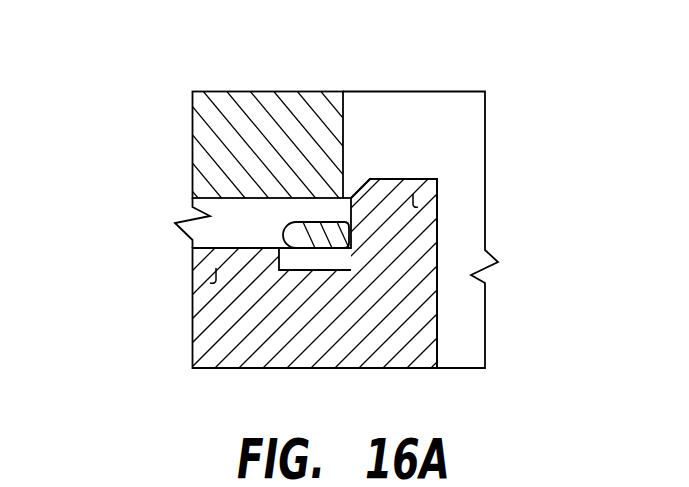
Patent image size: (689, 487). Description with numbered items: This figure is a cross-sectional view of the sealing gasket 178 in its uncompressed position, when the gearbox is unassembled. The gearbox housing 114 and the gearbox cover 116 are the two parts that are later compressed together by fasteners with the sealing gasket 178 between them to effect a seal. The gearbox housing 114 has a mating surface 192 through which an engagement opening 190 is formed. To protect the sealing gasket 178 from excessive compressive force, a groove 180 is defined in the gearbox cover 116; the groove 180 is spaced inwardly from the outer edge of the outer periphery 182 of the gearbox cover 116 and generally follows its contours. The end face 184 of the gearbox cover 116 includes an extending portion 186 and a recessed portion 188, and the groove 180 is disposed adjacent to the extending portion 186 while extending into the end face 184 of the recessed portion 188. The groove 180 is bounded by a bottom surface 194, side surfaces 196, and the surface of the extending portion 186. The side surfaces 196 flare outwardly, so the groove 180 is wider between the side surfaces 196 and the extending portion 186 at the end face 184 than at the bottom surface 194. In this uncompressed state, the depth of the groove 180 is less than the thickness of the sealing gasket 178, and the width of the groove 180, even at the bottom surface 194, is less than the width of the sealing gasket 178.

The gearbox housing 114 is at (307, 88).
The gearbox cover 116 is at (245, 369).
The sealing gasket 178 is at (310, 222).
The groove 180 is at (320, 257).
The outer periphery 182 is at (192, 333).
The end face 184 is at (245, 248).
The extending portion 186 is at (416, 220).
The recessed portion 188 is at (207, 268).
The engagement opening 190 is at (413, 130).
The mating surface 192 is at (243, 198).
The bottom surface 194 is at (415, 219).
The side surfaces 196 is at (281, 257).